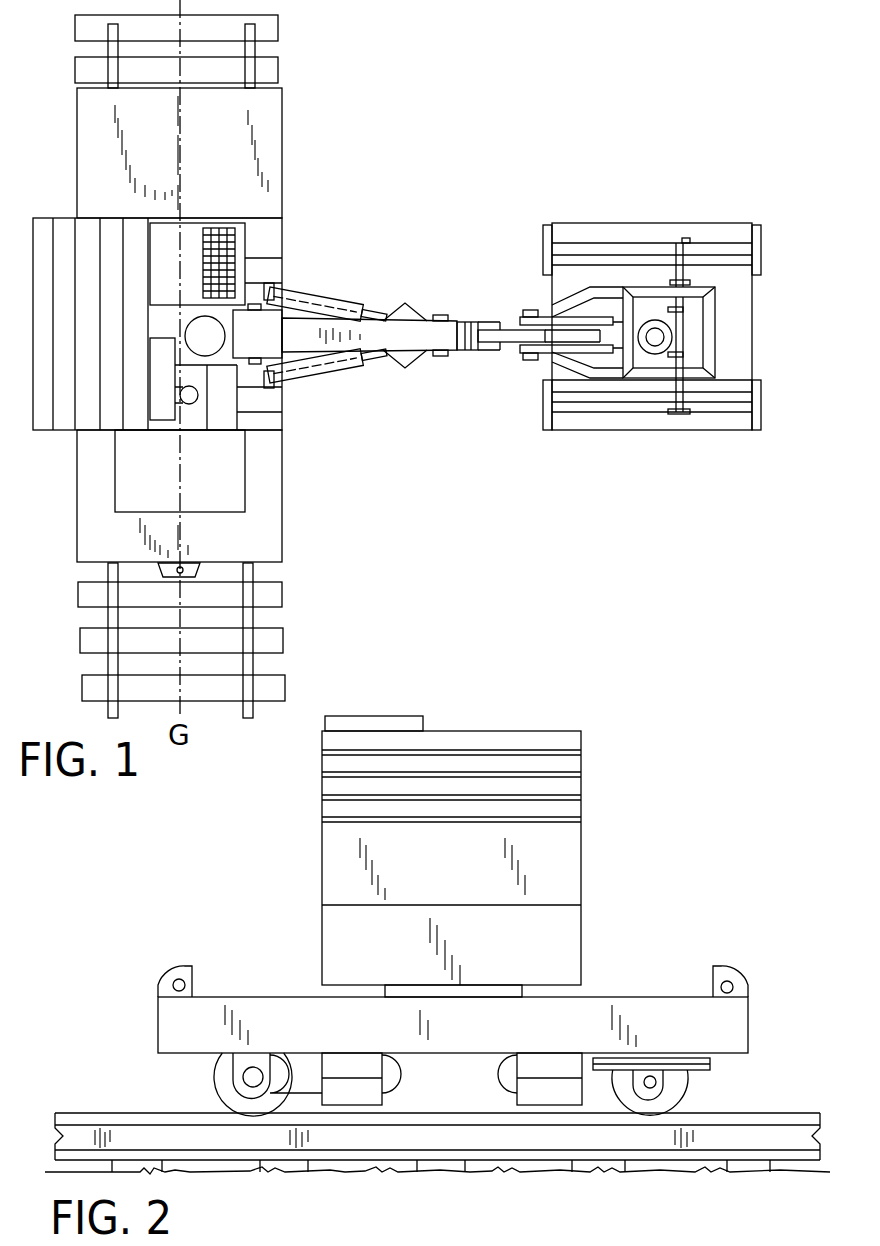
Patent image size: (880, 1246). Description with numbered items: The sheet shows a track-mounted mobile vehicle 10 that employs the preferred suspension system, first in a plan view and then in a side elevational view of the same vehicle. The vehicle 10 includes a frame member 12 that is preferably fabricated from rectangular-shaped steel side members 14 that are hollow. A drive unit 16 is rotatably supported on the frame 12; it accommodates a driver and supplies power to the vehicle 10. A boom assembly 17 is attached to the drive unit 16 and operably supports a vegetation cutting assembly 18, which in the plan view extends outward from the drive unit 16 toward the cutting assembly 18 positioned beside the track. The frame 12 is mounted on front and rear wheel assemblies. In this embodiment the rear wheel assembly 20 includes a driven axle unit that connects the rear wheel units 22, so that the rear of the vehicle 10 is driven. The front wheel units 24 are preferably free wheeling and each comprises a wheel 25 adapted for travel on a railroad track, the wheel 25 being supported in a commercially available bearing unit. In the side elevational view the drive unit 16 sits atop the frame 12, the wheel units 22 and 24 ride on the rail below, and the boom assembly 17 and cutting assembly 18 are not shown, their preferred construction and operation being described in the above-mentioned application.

In FIG. 1, the vehicle 10 is at (224, 332).
In FIG. 2, the vehicle 10 is at (514, 856).
In FIG. 1, the frame member 12 is at (230, 481).
In FIG. 2, the frame member 12 is at (453, 1012).
In FIG. 2, the side members 14 is at (610, 1012).
In FIG. 2, the drive unit 16 is at (466, 882).
In FIG. 1, the boom assembly 17 is at (437, 302).
In FIG. 1, the vegetation cutting assembly 18 is at (672, 210).
In FIG. 2, the rear wheel assembly 20 is at (202, 1084).
In FIG. 2, the rear wheel units 22 is at (214, 1092).
In FIG. 2, the front wheel units 24 is at (701, 1084).
In FIG. 2, the wheel 25 is at (682, 1100).